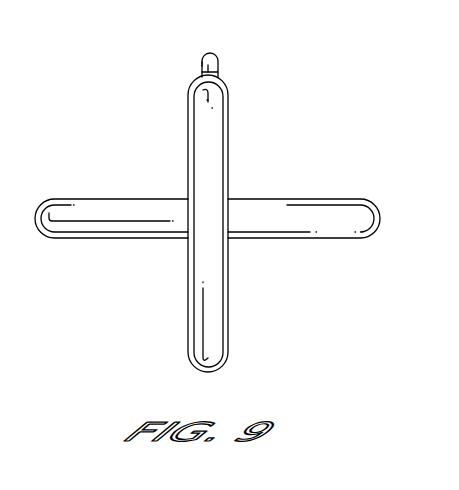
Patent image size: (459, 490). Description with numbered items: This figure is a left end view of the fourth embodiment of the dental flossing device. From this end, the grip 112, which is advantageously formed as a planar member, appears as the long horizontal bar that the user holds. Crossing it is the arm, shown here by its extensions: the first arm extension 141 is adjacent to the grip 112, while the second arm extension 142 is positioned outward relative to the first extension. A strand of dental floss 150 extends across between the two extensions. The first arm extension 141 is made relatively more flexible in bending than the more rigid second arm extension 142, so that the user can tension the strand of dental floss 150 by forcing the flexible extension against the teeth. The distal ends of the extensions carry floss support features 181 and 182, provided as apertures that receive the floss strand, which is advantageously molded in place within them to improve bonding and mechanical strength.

The grip 112 is at (330, 199).
The second arm extension 142 is at (208, 142).
The first arm extension 141 is at (213, 53).
The strand of dental floss 150 is at (218, 72).
The floss support feature 181 is at (201, 62).
The floss support feature 182 is at (207, 100).